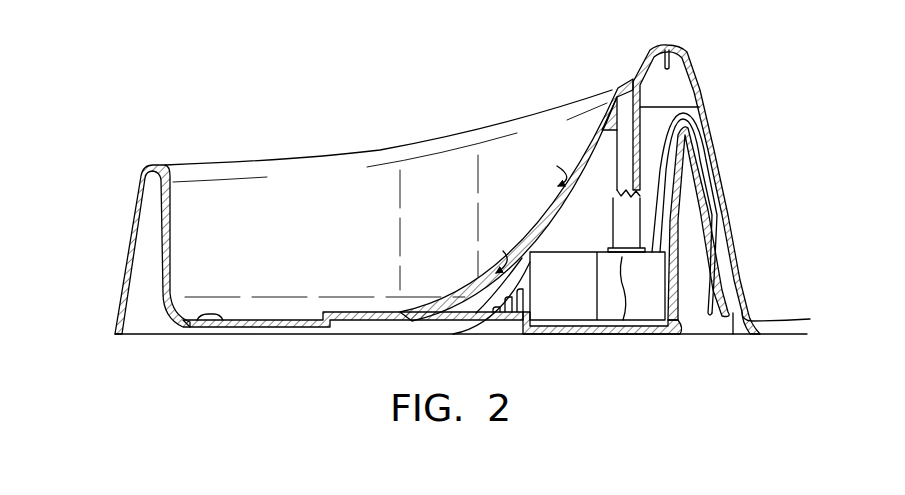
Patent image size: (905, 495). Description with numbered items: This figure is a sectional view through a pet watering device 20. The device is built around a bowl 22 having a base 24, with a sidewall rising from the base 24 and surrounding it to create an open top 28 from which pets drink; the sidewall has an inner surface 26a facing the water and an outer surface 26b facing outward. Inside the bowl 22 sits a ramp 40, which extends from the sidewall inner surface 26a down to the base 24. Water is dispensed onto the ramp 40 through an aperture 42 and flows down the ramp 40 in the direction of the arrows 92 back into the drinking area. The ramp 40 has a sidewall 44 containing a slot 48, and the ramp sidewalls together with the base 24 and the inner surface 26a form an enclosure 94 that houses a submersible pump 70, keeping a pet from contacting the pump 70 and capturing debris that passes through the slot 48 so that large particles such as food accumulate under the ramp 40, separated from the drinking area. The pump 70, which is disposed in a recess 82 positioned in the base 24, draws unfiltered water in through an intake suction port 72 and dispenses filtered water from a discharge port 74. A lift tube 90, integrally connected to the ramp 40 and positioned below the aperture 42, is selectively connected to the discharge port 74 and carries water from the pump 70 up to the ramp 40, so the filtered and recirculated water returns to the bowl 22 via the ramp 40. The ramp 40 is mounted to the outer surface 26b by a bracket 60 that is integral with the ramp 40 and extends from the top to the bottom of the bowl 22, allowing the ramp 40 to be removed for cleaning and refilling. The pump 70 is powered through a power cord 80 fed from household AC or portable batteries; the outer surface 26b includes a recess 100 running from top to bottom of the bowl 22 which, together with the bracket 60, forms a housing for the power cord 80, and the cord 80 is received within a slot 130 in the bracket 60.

The pet watering device 20 is at (266, 110).
The bowl 22 is at (198, 165).
The base 24 is at (212, 316).
The inner surface 26a is at (287, 232).
The outer surface 26b is at (124, 252).
The open top 28 is at (337, 200).
The ramp 40 is at (580, 148).
The aperture 42 is at (618, 87).
The sidewall 44 is at (604, 205).
The slot 48 is at (518, 313).
The bracket 60 is at (705, 100).
The submersible pump 70 is at (575, 302).
The intake suction port 72 is at (500, 297).
The discharge port 74 is at (625, 321).
The power cord 80 is at (718, 190).
The recess 82 is at (655, 326).
The lift tube 90 is at (623, 208).
The arrows 92 is at (526, 207).
The enclosure 94 is at (485, 306).
The recess 100 is at (727, 273).
The slot 130 is at (753, 323).